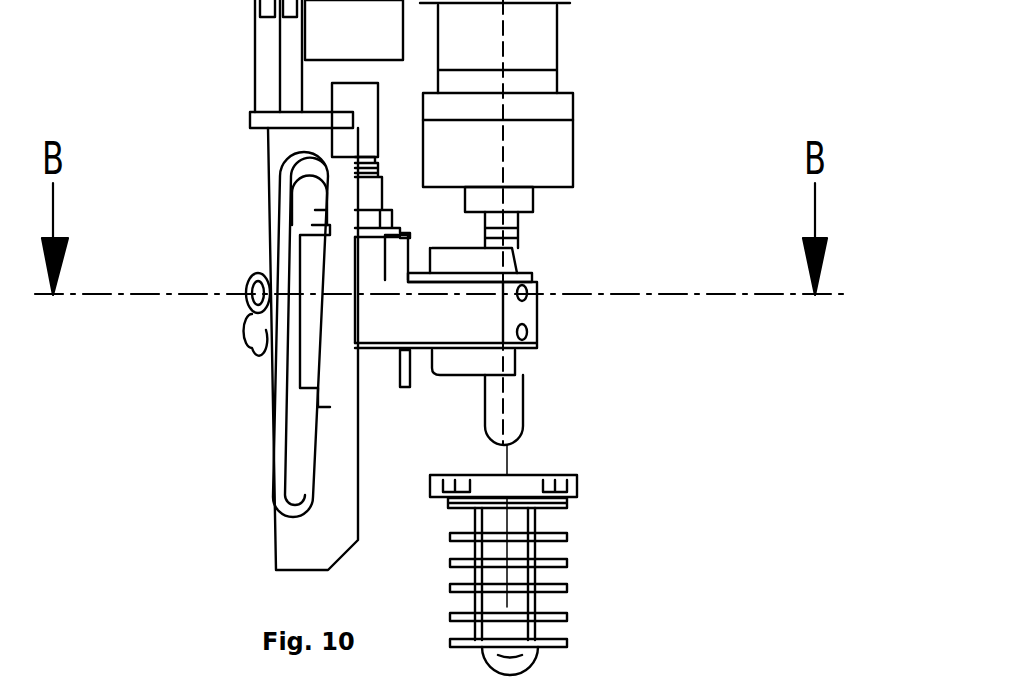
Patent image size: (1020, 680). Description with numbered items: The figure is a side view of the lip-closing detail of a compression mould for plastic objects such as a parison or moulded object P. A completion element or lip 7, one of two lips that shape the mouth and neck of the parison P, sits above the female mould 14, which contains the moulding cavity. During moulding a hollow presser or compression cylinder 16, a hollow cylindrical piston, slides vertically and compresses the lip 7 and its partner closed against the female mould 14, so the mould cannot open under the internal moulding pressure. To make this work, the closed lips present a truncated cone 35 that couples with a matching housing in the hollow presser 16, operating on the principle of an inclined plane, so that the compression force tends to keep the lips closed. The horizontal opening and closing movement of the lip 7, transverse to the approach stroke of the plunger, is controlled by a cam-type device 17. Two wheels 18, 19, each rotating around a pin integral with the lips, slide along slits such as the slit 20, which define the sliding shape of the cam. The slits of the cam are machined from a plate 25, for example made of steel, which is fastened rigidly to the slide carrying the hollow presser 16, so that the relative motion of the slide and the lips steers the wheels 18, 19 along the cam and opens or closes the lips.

The completion element (lip) 7 is at (517, 313).
The female mould 14 is at (560, 588).
The hollow presser (compression cylinder) 16 is at (548, 108).
The cam-type device 17 is at (256, 536).
The wheel 18 is at (250, 283).
The wheel 19 is at (255, 350).
The slit 20 is at (305, 175).
The plate 25 is at (340, 523).
The truncated cone 35 is at (455, 365).
The parison (moulded object) P is at (513, 437).